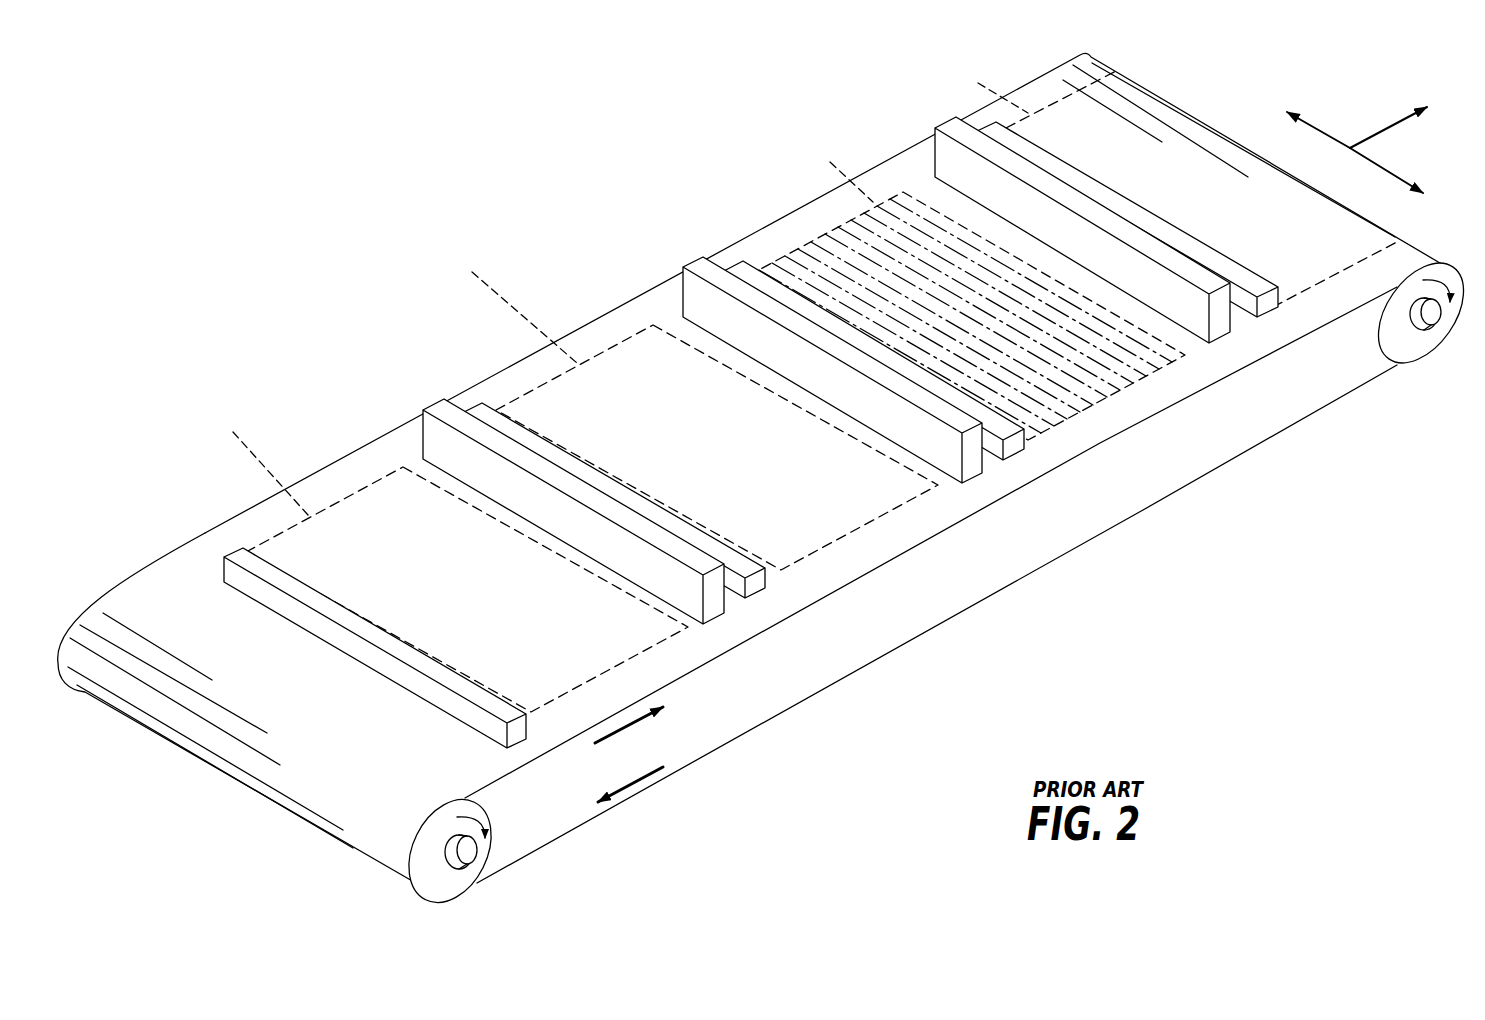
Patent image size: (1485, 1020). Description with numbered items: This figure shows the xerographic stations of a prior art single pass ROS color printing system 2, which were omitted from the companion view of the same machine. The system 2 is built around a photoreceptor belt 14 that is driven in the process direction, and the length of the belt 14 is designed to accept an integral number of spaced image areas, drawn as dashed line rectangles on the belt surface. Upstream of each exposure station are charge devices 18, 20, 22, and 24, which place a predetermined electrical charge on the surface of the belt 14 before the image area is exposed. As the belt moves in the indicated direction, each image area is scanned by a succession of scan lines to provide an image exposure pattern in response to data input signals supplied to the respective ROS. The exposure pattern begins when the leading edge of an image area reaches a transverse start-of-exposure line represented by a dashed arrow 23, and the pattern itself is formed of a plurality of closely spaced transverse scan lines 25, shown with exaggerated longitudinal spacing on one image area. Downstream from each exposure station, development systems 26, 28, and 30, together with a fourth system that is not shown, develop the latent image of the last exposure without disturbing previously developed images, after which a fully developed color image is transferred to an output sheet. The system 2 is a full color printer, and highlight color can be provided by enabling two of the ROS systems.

The single pass ROS color printing system 2 is at (769, 484).
The photoreceptor belt 14 is at (317, 758).
The charge device 18 is at (528, 733).
The charge device 20 is at (760, 590).
The charge device 22 is at (1025, 449).
The start-of-exposure line 23 is at (1183, 353).
The charge device 24 is at (1270, 302).
The transverse scan lines 25 is at (955, 305).
The development system 26 is at (717, 610).
The development system 28 is at (973, 468).
The development system 30 is at (1230, 328).